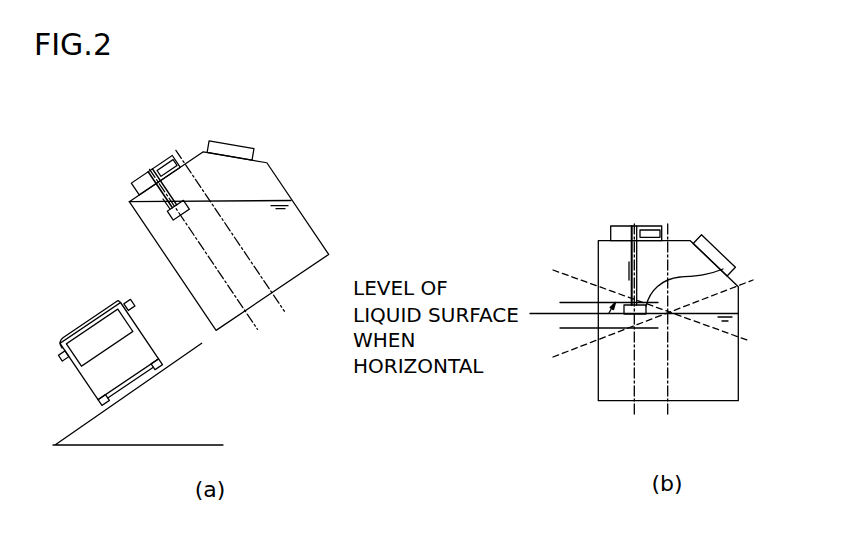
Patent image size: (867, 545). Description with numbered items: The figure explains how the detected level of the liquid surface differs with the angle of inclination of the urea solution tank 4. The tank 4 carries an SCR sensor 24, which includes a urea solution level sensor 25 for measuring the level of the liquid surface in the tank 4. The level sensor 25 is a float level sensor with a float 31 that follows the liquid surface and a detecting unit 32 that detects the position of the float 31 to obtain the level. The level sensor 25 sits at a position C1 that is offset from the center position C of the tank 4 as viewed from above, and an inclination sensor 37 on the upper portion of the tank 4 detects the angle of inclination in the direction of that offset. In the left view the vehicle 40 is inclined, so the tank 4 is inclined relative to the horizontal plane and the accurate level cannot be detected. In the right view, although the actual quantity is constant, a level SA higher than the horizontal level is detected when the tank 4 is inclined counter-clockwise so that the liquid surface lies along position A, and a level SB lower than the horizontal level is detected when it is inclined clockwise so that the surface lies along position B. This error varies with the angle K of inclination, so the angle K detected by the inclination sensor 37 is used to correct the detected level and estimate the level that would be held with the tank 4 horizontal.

The urea solution tank 4 is at (281, 177).
The SCR sensor 24 is at (132, 184).
The urea solution level sensor 25 is at (162, 206).
The float 31 is at (173, 221).
The detecting unit 32 is at (161, 192).
The inclination sensor 37 is at (176, 152).
The vehicle 40 is at (80, 326).
The center position C is at (176, 151).
The position C1 is at (157, 172).
The position A is at (642, 300).
The position B is at (645, 327).
The level SA is at (596, 301).
The level SB is at (596, 327).
The angle of inclination K is at (618, 294).